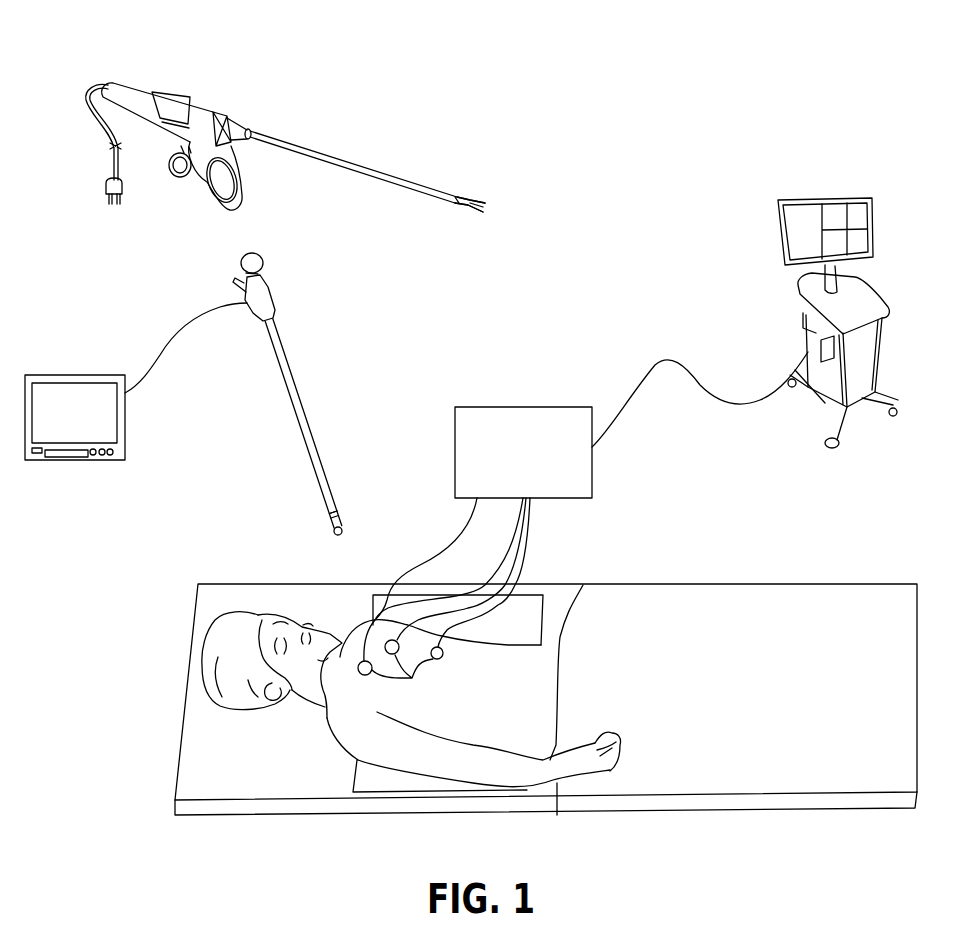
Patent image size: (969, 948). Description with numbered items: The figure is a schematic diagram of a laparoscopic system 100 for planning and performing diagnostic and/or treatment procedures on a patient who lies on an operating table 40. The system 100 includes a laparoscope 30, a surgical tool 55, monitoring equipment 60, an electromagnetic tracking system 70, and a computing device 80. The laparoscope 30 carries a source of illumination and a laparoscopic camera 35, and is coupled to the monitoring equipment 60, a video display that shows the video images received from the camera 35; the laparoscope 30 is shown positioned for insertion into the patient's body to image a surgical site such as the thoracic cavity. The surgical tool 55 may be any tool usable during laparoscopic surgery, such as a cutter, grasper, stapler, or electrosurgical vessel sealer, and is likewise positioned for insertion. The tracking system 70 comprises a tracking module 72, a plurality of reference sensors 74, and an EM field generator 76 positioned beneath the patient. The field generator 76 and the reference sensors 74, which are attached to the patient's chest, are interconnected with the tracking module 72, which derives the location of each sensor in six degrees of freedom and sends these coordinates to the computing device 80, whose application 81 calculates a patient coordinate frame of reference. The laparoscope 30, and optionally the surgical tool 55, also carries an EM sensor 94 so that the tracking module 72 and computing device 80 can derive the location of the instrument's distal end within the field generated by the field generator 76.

The system 100 is at (485, 50).
The surgical tool 55 is at (321, 156).
The EM sensor 94 is at (460, 198).
The laparoscope 30 is at (287, 412).
The laparoscopic camera 35 is at (333, 537).
The monitoring equipment 60 is at (90, 426).
The EM tracking system 70 is at (552, 349).
The tracking module 72 is at (538, 460).
The reference sensors 74 is at (411, 679).
The EM field generator 76 is at (365, 782).
The operating table 40 is at (205, 750).
The computing device 80 is at (884, 333).
The application 81 is at (872, 203).